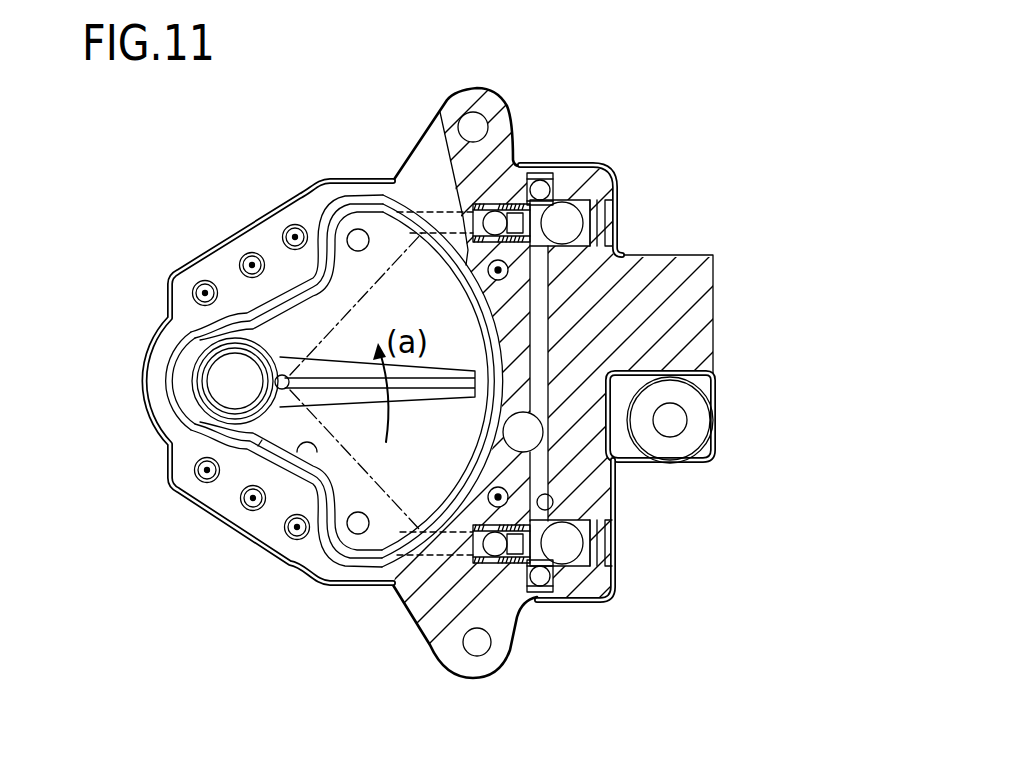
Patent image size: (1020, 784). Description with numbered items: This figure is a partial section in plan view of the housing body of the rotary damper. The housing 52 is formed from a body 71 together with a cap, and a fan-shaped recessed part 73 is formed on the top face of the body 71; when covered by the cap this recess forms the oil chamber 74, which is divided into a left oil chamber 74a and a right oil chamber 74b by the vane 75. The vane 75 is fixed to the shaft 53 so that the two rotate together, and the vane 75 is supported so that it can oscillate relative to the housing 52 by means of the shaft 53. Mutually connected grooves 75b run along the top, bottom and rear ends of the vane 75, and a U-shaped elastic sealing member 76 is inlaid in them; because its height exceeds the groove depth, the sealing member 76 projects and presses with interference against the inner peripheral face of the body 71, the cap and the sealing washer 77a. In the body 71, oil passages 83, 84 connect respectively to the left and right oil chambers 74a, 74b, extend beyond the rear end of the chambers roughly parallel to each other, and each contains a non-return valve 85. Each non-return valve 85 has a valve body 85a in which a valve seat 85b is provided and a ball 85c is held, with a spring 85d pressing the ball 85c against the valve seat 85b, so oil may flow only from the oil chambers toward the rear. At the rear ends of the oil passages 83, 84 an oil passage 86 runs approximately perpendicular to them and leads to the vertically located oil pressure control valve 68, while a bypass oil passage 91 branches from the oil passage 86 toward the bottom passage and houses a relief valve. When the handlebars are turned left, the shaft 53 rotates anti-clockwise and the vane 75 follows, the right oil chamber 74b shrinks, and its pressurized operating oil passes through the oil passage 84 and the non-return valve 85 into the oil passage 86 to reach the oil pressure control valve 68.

The housing 52 is at (616, 145).
The shaft 53 is at (224, 393).
The oil pressure control valve 68 is at (532, 437).
The body 71 is at (257, 240).
The recessed part 73 is at (293, 478).
The oil chamber 74 is at (442, 381).
The left oil chamber 74a is at (322, 583).
The right oil chamber 74b is at (330, 228).
The vane 75 is at (433, 368).
The grooves 75b is at (258, 446).
The sealing member 76 is at (267, 327).
The sealing washer 77a is at (192, 378).
The oil passage 83 is at (420, 587).
The oil passage 84 is at (463, 217).
The non-return valve 85 is at (500, 205).
The valve body 85a is at (513, 585).
The valve seat 85b is at (458, 565).
The ball 85c is at (492, 538).
The spring 85d is at (525, 565).
The oil passage 86 is at (540, 299).
The bypass oil passage 91 is at (546, 503).